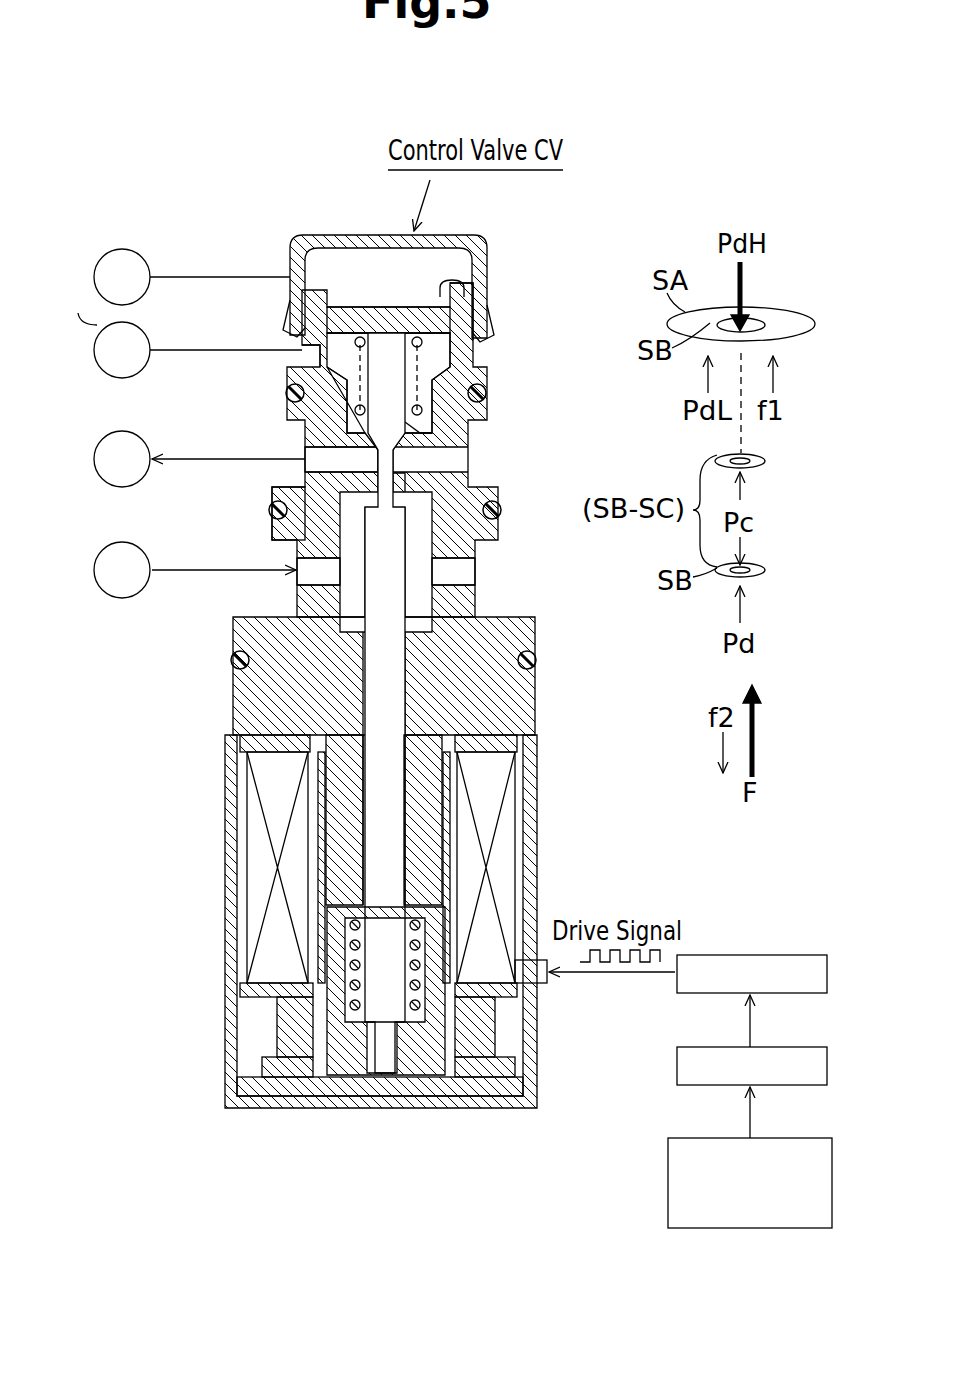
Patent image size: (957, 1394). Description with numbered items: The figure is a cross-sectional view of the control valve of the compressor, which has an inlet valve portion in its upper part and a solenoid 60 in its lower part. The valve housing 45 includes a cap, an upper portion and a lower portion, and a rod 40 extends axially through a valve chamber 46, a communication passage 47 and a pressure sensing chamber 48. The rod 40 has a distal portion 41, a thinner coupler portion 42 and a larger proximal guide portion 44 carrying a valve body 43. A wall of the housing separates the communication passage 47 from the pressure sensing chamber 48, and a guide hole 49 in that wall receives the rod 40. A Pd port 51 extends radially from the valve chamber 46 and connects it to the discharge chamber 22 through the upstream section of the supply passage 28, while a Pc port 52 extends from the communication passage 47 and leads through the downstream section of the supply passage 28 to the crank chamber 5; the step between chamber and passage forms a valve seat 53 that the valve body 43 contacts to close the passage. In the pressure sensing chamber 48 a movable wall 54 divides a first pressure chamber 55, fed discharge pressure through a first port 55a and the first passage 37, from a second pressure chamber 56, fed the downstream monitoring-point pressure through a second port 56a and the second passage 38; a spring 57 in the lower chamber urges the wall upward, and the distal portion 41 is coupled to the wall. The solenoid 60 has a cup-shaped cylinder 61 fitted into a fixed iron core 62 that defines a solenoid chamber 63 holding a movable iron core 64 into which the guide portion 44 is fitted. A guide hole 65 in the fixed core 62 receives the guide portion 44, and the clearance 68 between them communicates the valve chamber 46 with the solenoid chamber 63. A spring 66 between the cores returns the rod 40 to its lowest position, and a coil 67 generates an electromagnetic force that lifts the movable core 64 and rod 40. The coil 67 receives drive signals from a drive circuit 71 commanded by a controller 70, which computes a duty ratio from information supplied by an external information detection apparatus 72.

The crank chamber 5 is at (100, 428).
The discharge chamber 22 is at (102, 250).
The supply passage 28 is at (188, 565).
The first passage 37 is at (177, 272).
The second passage 38 is at (172, 345).
The rod 40 is at (400, 647).
The distal portion 41 is at (390, 375).
The coupler portion 42 is at (403, 455).
The valve body 43 is at (393, 513).
The guide portion 44 is at (373, 807).
The valve housing 45 is at (338, 237).
The valve chamber 46 is at (437, 587).
The communication passage 47 is at (402, 475).
The pressure sensing chamber 48 is at (453, 282).
The guide hole 49 is at (407, 423).
The Pd port 51 is at (290, 575).
The Pc port 52 is at (298, 448).
The valve seat 53 is at (283, 488).
The movable wall 54 is at (480, 293).
The P1 pressure chamber 55 is at (370, 289).
The P1 port 55a is at (287, 270).
The P2 pressure chamber 56 is at (350, 369).
The P2 port 56a is at (287, 347).
The spring 57 is at (443, 320).
The solenoid 60 is at (543, 765).
The cup-shaped cylinder 61 is at (267, 750).
The fixed iron core 62 is at (337, 720).
The solenoid chamber 63 is at (327, 905).
The movable iron core 64 is at (340, 1040).
The guide hole 65 is at (365, 840).
The spring 66 is at (350, 958).
The coil 67 is at (505, 848).
The clearance 68 is at (443, 708).
The controller 70 is at (677, 1063).
The drive circuit 71 is at (795, 953).
The external information detection apparatus 72 is at (668, 1162).